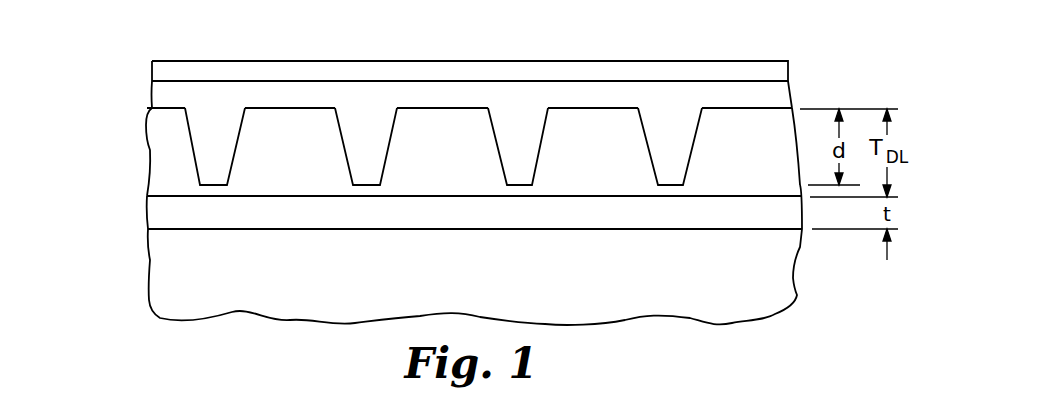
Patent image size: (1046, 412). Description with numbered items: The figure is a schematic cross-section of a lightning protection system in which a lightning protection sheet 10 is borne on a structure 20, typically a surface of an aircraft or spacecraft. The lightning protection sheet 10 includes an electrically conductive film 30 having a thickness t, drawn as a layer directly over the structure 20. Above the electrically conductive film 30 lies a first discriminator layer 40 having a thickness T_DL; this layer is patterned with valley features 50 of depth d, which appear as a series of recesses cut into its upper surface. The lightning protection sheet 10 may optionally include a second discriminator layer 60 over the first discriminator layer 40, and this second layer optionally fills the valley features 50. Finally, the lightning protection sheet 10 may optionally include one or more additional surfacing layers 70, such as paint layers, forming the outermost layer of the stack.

The lightning protection sheet 10 is at (65, 53).
The structure 20 is at (160, 263).
The electrically conductive film 30 is at (160, 213).
The first discriminator layer 40 is at (160, 155).
The valley features 50 is at (363, 155).
The second discriminator layer 60 is at (163, 100).
The additional surfacing layers 70 is at (163, 70).